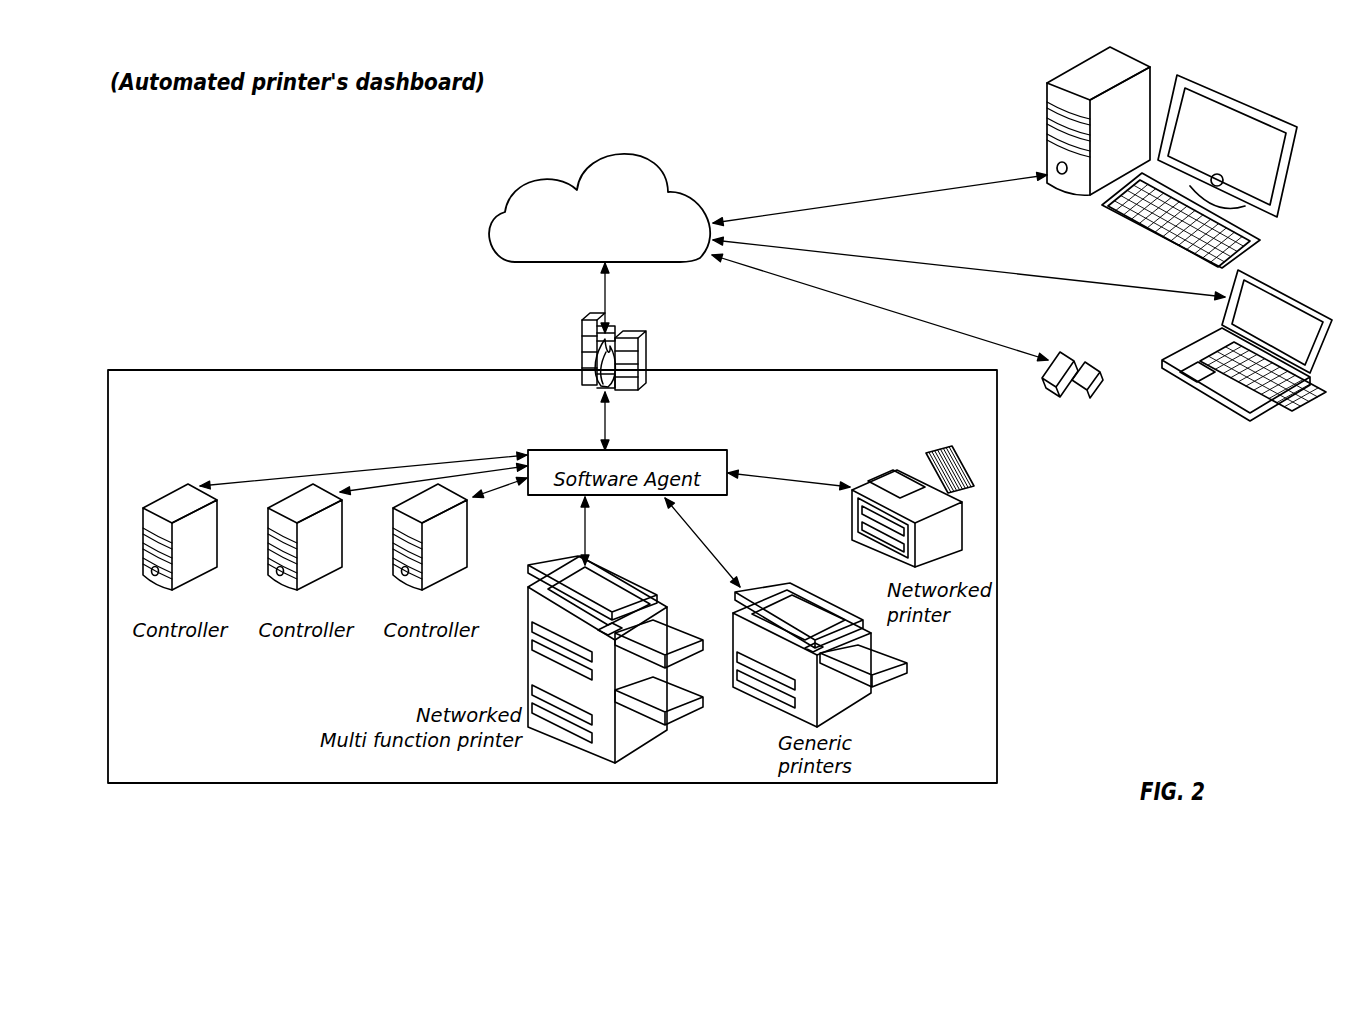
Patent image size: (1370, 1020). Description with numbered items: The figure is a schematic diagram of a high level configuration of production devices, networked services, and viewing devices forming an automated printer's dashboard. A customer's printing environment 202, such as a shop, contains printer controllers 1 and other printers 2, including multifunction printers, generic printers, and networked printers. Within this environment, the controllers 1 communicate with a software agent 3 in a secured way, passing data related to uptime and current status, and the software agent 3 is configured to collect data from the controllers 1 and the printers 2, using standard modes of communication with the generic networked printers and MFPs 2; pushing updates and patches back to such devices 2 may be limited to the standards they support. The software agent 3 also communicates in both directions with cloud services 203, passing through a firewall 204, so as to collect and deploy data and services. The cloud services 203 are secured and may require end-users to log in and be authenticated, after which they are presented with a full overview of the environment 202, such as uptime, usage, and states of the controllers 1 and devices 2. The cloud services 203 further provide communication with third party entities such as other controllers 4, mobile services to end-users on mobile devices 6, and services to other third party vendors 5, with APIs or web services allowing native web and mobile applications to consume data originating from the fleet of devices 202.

The customer's printing environment 202 is at (198, 372).
The cloud services 203 is at (634, 153).
The firewall 204 is at (622, 334).
The printer controllers 1 is at (363, 477).
The printers 2 is at (710, 527).
The software agent 3 is at (605, 421).
The other controllers 4 is at (880, 199).
The third party vendors 5 is at (969, 268).
The mobile devices 6 is at (880, 307).